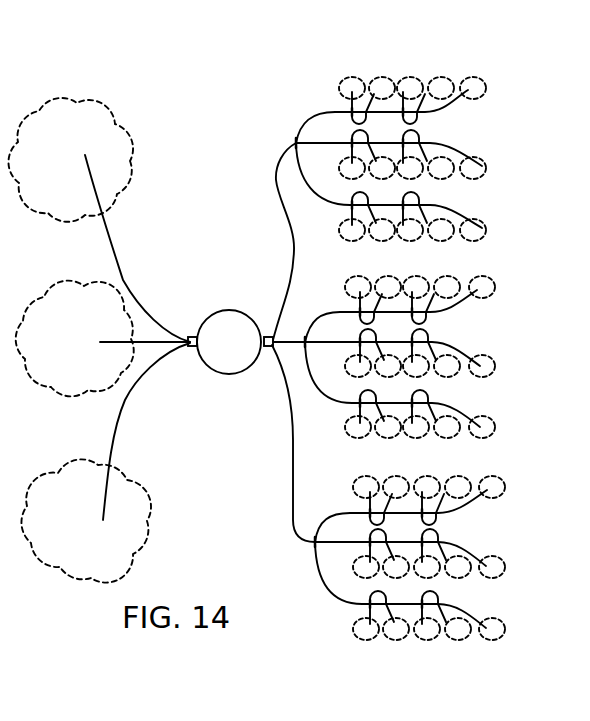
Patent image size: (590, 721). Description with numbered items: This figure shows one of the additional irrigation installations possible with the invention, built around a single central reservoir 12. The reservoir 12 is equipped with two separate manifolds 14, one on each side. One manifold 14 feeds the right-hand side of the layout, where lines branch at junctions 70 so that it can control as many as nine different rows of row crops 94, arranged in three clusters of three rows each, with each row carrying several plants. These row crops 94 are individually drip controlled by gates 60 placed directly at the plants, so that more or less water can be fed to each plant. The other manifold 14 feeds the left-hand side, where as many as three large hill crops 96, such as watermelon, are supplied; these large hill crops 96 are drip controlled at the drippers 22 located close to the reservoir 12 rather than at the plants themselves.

The reservoir 12 is at (235, 322).
The manifold 14 is at (222, 391).
The dripper 22 is at (193, 350).
The gate 60 is at (410, 90).
The branch node splitter 70 is at (296, 142).
The row crops 94 is at (482, 168).
The large hill crops 96 is at (108, 126).